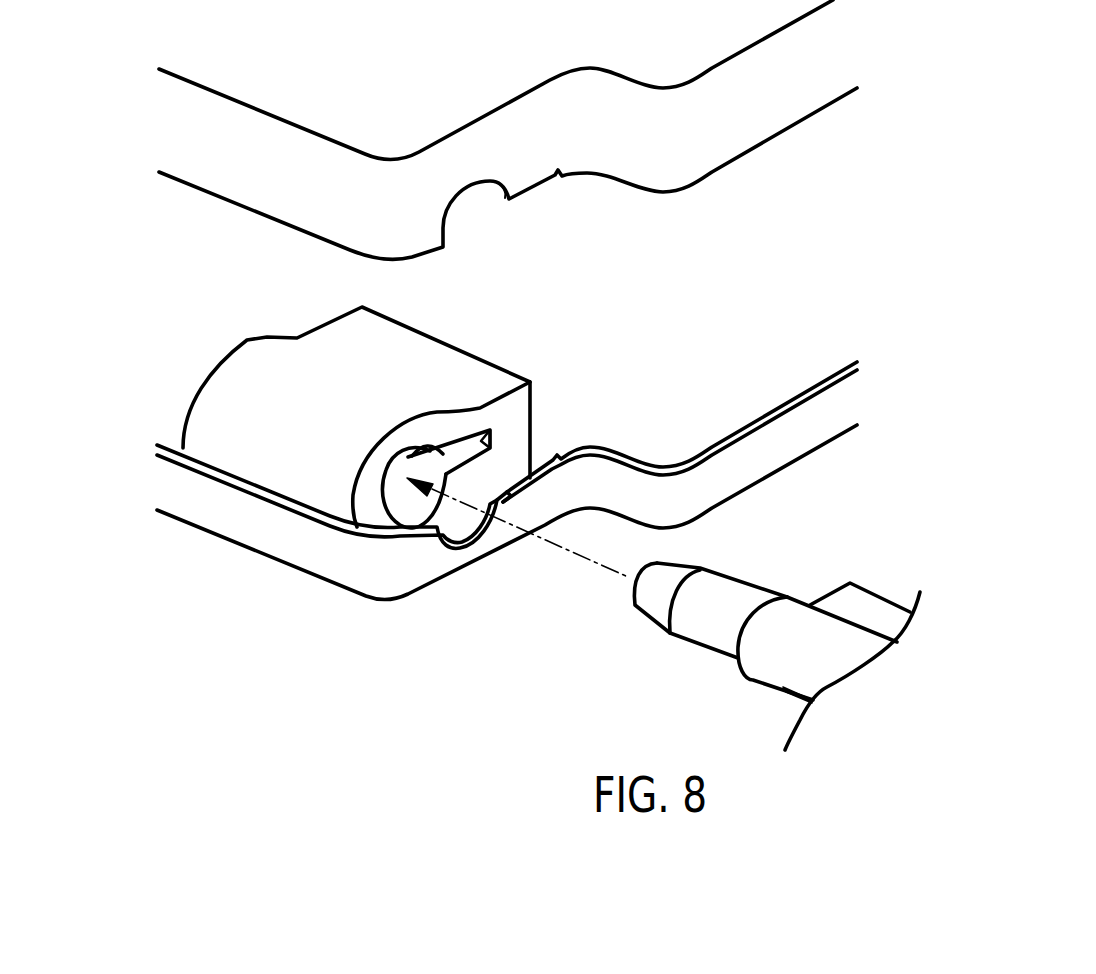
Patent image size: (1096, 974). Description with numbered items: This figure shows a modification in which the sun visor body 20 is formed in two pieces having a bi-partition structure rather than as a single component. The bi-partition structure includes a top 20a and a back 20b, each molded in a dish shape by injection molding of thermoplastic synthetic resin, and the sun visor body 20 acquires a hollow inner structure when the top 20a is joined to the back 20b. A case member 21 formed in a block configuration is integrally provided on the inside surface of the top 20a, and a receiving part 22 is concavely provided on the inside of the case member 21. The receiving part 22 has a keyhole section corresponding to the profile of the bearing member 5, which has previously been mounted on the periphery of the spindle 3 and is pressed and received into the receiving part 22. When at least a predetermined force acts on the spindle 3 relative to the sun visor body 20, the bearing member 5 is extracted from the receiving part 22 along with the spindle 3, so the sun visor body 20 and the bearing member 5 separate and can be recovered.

The sun visor body 20 is at (115, 220).
The top 20a is at (222, 513).
The back 20b is at (226, 157).
The case member 21 is at (423, 363).
The receiving part 22 is at (400, 510).
The spindle 3 is at (718, 595).
The bearing member 5 is at (823, 640).